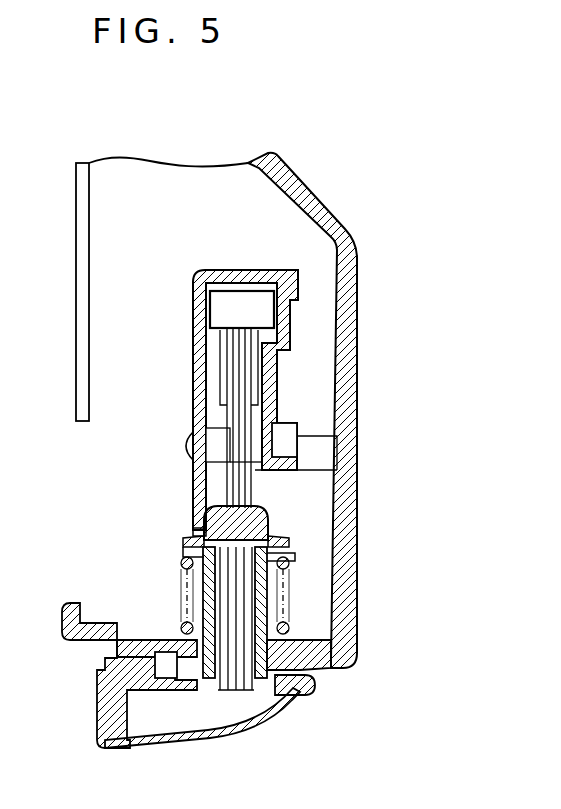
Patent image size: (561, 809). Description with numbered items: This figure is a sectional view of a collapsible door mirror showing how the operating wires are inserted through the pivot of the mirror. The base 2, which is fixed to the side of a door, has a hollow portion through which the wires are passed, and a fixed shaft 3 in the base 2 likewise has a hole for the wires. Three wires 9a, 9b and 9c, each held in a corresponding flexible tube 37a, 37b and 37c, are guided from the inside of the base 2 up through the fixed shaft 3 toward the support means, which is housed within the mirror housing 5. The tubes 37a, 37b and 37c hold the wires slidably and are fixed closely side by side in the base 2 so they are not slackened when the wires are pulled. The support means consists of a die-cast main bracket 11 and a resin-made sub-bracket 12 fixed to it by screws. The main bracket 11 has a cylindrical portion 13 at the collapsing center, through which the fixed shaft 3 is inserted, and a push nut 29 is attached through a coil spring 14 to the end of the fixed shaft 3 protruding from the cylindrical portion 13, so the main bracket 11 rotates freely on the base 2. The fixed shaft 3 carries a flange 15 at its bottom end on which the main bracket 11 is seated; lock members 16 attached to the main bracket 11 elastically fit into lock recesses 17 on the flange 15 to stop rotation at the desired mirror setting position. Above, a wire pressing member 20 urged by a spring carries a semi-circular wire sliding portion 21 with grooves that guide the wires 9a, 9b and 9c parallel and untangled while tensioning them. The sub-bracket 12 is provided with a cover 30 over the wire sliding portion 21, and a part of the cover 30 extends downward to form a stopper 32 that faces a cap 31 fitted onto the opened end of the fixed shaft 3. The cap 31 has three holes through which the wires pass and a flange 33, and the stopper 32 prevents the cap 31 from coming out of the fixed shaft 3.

The base 2 is at (292, 708).
The fixed shaft 3 is at (288, 586).
The mirror housing 5 is at (350, 352).
The wire 9a is at (215, 445).
The wire 9b is at (248, 402).
The wire 9c is at (257, 420).
The main bracket 11 is at (280, 386).
The sub-bracket 12 is at (238, 267).
The cylindrical portion 13 is at (289, 580).
The coil spring 14 is at (185, 605).
The flange 15 is at (100, 684).
The lock member 16 is at (165, 665).
The lock recess 17 is at (186, 680).
The wire pressing member 20 is at (221, 349).
The wire sliding portion 21 is at (222, 380).
The push nut 29 is at (187, 547).
The cover 30 is at (195, 318).
The cap 31 is at (262, 520).
The stopper 32 is at (200, 522).
The flange 33 is at (272, 543).
The tube 37a is at (210, 632).
The tube 37b is at (313, 688).
The tube 37c is at (320, 660).